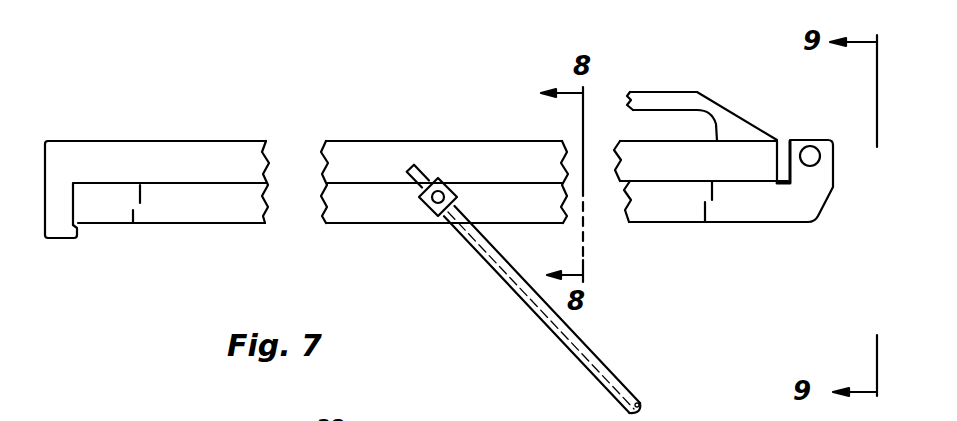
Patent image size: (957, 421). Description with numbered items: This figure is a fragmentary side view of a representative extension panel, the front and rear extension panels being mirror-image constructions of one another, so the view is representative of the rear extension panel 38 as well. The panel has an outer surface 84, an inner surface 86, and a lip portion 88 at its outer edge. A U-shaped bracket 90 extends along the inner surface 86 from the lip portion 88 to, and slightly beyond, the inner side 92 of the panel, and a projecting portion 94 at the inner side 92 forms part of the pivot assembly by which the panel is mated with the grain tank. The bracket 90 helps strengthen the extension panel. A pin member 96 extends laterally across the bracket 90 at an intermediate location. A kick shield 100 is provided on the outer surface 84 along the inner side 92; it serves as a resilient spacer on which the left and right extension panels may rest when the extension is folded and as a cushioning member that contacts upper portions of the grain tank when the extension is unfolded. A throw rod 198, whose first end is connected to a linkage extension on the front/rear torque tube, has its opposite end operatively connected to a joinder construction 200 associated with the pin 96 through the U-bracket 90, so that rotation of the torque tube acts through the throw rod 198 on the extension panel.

The rear extension panel 38 is at (107, 141).
The outer surface 84 is at (202, 141).
The inner surface 86 is at (232, 185).
The lip portion 88 is at (66, 240).
The U-shaped bracket 90 is at (165, 210).
The inner side 92 is at (777, 162).
The projecting portion 94 is at (813, 190).
The pin member 96 is at (436, 200).
The kick shield 100 is at (655, 92).
The throw rod 198 is at (557, 333).
The joinder construction 200 is at (448, 183).